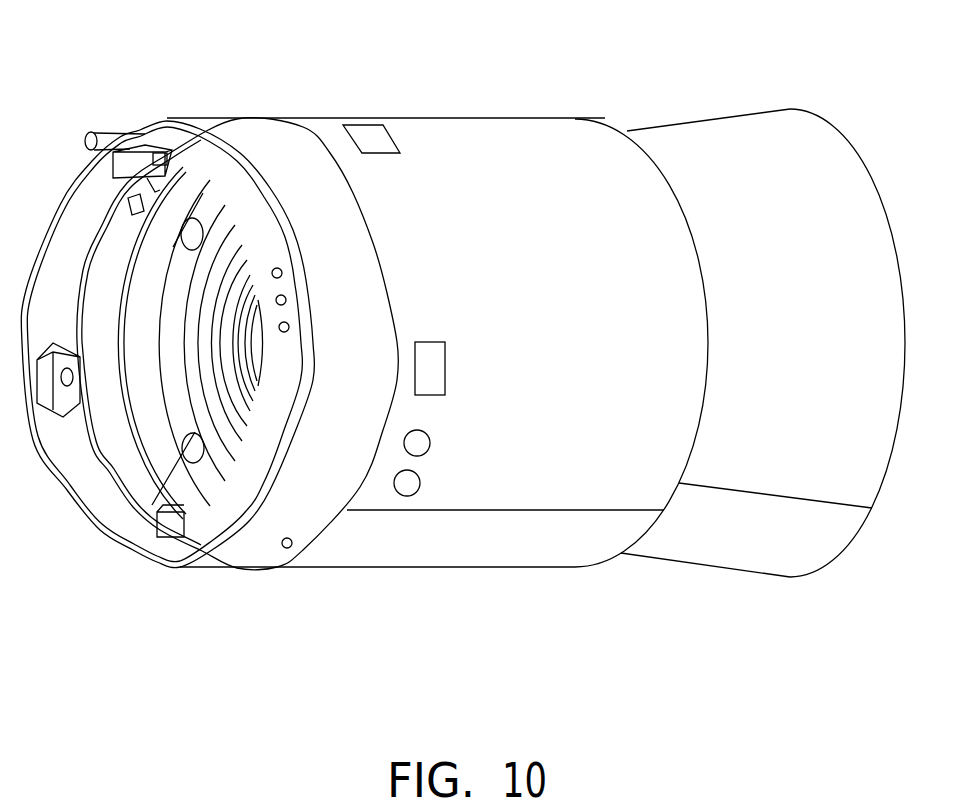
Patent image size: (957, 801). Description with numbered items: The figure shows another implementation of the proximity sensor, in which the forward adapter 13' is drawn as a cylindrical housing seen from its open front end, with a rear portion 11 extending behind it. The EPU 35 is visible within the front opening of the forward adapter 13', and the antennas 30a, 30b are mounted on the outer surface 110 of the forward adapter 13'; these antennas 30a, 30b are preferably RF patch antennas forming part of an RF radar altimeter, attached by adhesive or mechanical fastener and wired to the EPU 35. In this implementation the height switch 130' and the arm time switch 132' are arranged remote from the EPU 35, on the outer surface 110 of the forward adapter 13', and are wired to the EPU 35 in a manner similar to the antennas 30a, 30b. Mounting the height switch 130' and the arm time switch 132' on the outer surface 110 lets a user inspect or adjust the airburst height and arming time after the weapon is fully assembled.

The rear housing portion 11 is at (777, 106).
The forward adapter 13' is at (437, 302).
The antenna 30a is at (373, 128).
The antenna 30b is at (430, 370).
The EPU 35 is at (227, 357).
The outer surface 110 is at (598, 487).
The height switch 130' is at (476, 533).
The arm time switch 132' is at (393, 566).